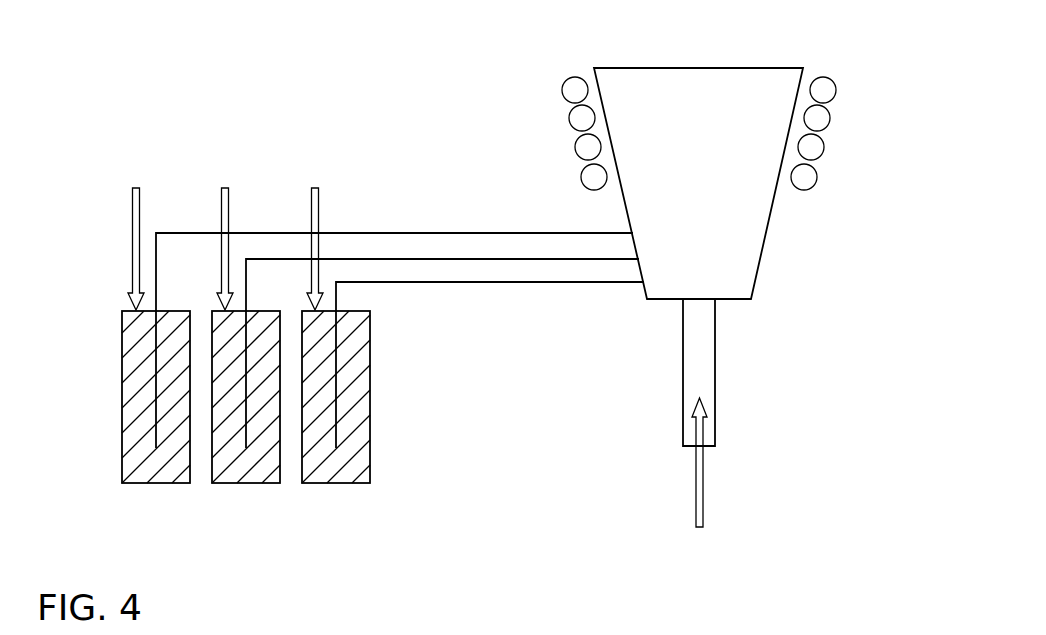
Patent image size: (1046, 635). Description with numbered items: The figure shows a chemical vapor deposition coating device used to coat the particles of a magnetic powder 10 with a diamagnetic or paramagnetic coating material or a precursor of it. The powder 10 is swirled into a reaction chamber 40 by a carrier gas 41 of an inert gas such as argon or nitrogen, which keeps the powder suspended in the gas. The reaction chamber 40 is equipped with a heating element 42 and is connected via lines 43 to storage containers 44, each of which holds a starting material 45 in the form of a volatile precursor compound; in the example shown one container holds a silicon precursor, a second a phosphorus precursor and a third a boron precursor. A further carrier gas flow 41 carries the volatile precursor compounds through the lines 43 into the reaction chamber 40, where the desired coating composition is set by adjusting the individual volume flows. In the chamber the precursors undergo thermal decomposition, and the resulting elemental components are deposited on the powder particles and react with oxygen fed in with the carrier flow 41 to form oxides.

The powder 10 is at (698, 183).
The reaction chamber 40 is at (758, 265).
The carrier gas 41 is at (316, 209).
The heating element 42 is at (804, 180).
The lines 43 is at (476, 233).
The storage containers 44 is at (121, 437).
The starting material 45 is at (142, 466).